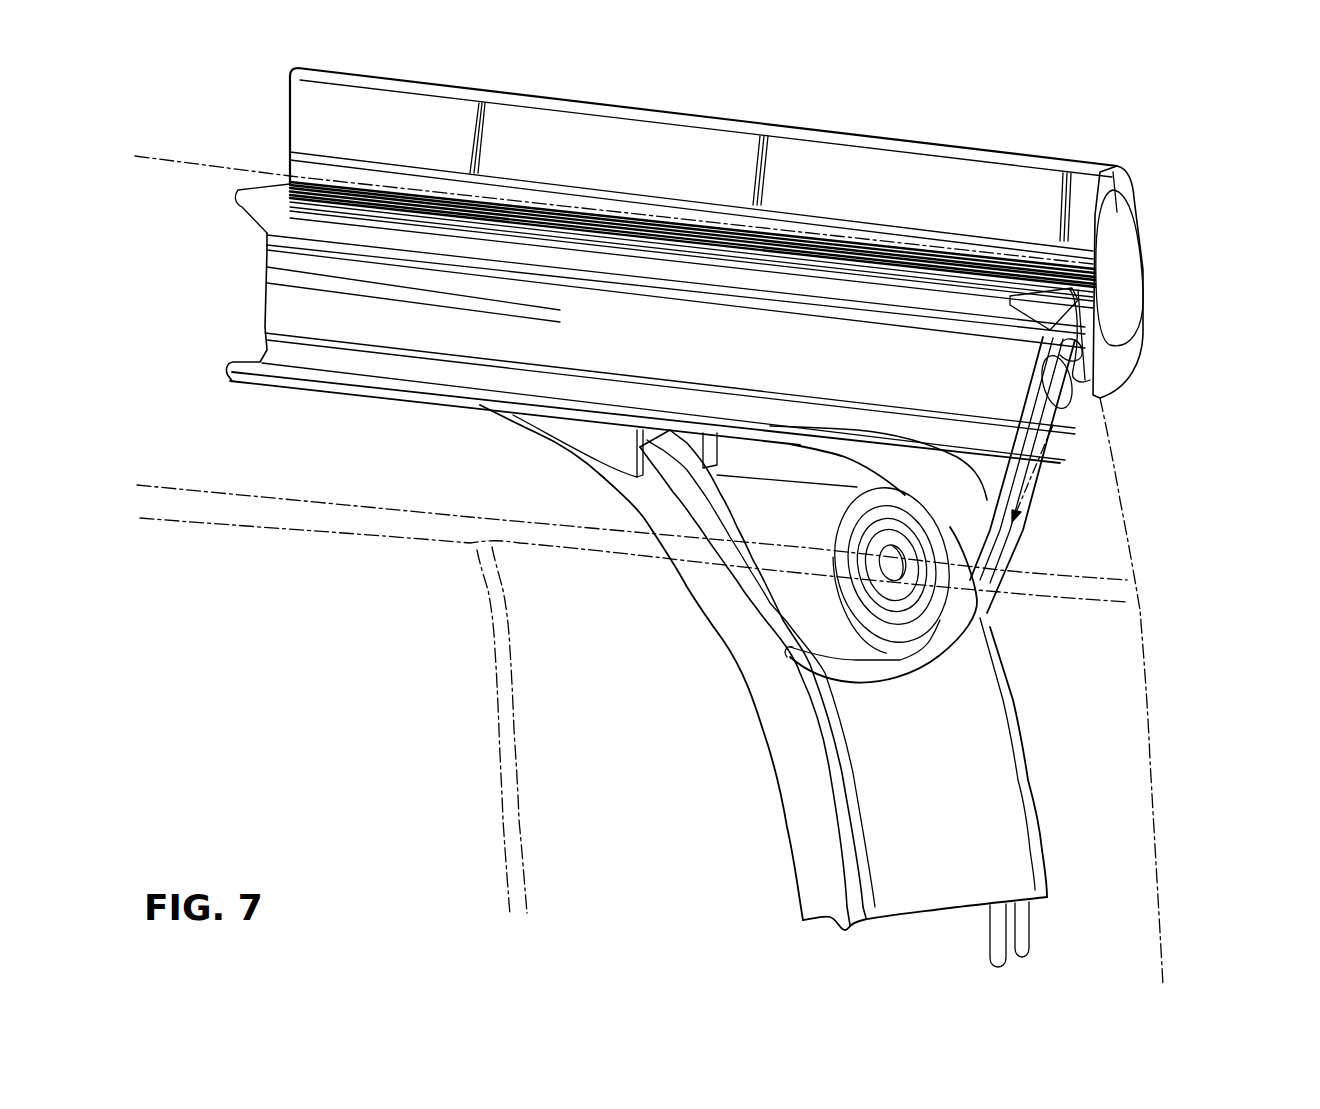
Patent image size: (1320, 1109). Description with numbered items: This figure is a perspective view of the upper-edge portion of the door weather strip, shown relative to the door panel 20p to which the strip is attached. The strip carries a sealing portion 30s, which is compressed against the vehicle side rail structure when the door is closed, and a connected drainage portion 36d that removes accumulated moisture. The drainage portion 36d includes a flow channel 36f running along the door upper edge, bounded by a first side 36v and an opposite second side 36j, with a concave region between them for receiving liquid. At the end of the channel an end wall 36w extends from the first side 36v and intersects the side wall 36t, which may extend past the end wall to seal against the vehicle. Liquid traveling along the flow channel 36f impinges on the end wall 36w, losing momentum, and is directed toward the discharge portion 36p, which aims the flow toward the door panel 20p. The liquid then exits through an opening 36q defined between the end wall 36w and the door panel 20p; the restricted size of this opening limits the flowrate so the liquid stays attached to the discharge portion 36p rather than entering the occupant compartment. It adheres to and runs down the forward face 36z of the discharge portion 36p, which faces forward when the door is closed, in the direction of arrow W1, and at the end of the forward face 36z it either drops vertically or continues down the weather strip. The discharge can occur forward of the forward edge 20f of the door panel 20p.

The side wall 36t is at (955, 144).
The first side of the flow channel 36v is at (657, 196).
The flow channel 36f is at (356, 170).
The second side of the flow channel 36j is at (241, 192).
The drainage portion 36d is at (334, 282).
The end wall 36w is at (1130, 272).
The opening 36q is at (1073, 350).
The arrow indicating liquid flow direction W1 is at (1100, 398).
The forward face 36z is at (1013, 550).
The discharge portion 36p is at (1152, 439).
The sealing portion 30s is at (987, 746).
The forward edge of the door panel 20f is at (1150, 656).
The door panel 20p is at (1163, 840).